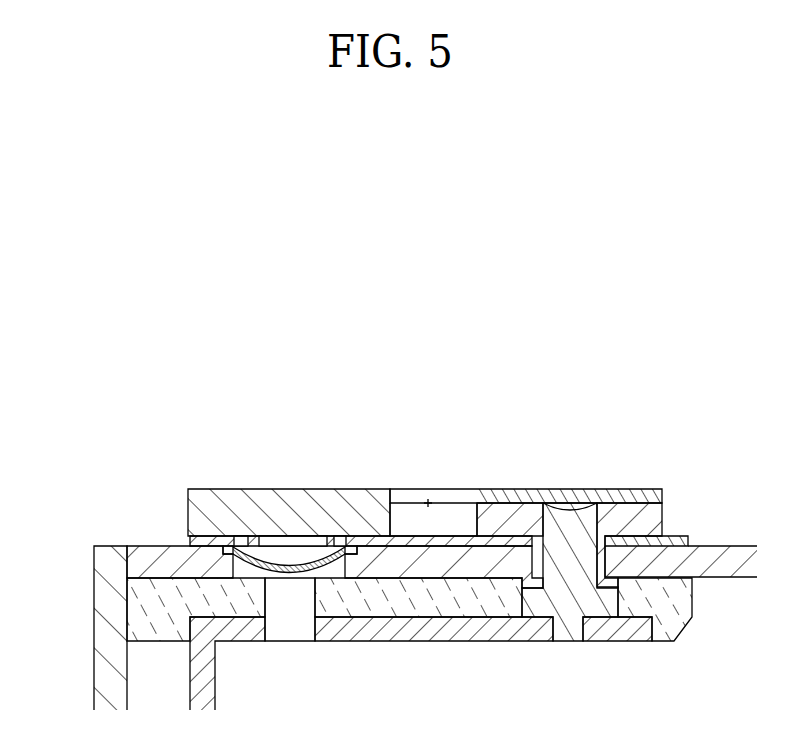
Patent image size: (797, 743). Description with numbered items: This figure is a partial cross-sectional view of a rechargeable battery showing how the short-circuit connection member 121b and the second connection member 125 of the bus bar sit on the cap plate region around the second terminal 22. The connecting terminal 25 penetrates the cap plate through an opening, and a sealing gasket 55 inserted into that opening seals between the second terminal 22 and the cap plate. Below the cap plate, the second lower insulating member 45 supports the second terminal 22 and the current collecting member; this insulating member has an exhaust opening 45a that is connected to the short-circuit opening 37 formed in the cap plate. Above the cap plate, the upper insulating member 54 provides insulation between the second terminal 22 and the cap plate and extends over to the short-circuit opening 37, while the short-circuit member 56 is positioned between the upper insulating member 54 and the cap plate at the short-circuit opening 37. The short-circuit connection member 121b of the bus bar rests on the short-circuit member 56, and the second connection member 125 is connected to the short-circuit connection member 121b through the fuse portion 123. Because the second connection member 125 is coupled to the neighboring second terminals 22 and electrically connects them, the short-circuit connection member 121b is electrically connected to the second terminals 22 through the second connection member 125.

The second terminal 22 is at (517, 523).
The connecting terminal 25 is at (572, 523).
The short-circuit opening 37 is at (237, 557).
The second lower insulating member 45 is at (153, 611).
The exhaust opening 45a is at (266, 589).
The upper insulating member 54 is at (680, 536).
The sealing gasket 55 is at (530, 562).
The short-circuit member 56 is at (290, 566).
The short-circuit connection member 121b is at (362, 500).
The fuse portion 123 is at (412, 500).
The second connection member 125 is at (628, 493).